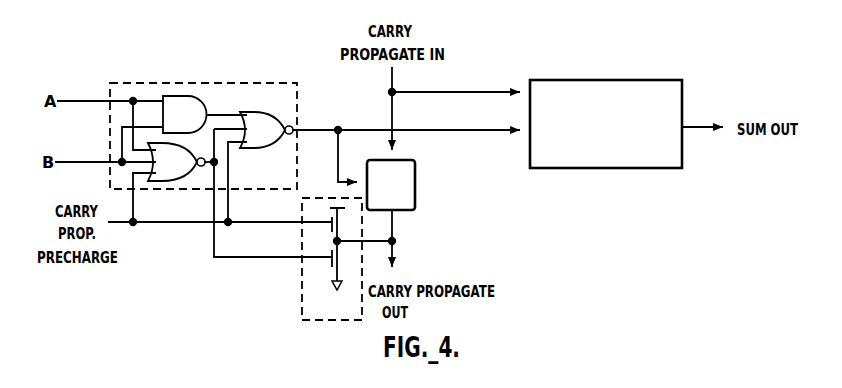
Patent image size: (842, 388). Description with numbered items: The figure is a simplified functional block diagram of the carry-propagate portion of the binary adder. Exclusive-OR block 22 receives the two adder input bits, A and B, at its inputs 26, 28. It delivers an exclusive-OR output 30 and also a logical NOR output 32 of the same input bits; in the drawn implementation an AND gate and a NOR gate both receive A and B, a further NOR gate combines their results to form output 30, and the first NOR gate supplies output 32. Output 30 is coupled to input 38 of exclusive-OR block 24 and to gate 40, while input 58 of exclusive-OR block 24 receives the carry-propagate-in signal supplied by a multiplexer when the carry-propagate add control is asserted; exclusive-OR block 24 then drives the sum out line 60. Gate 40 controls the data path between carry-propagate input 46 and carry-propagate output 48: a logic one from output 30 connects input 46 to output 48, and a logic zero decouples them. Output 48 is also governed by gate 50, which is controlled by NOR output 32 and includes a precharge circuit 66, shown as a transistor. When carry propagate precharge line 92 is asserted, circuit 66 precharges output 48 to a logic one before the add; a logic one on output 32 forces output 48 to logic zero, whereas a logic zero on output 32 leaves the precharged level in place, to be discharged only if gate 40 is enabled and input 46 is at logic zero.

The exclusive-OR block 22 is at (227, 83).
The exclusive-OR block 24 is at (647, 80).
The input 26 is at (77, 100).
The input 28 is at (86, 163).
The output 30 is at (314, 130).
The output 32 is at (235, 257).
The input 38 is at (457, 130).
The gate 40 is at (416, 188).
The carry-propagate input 46 is at (393, 78).
The carry-propagate output 48 is at (394, 255).
The gate 50 is at (302, 290).
The input 58 is at (457, 92).
The sum out line 60 is at (693, 127).
The precharge circuit 66 is at (344, 221).
The carry propagate precharge line 92 is at (128, 217).